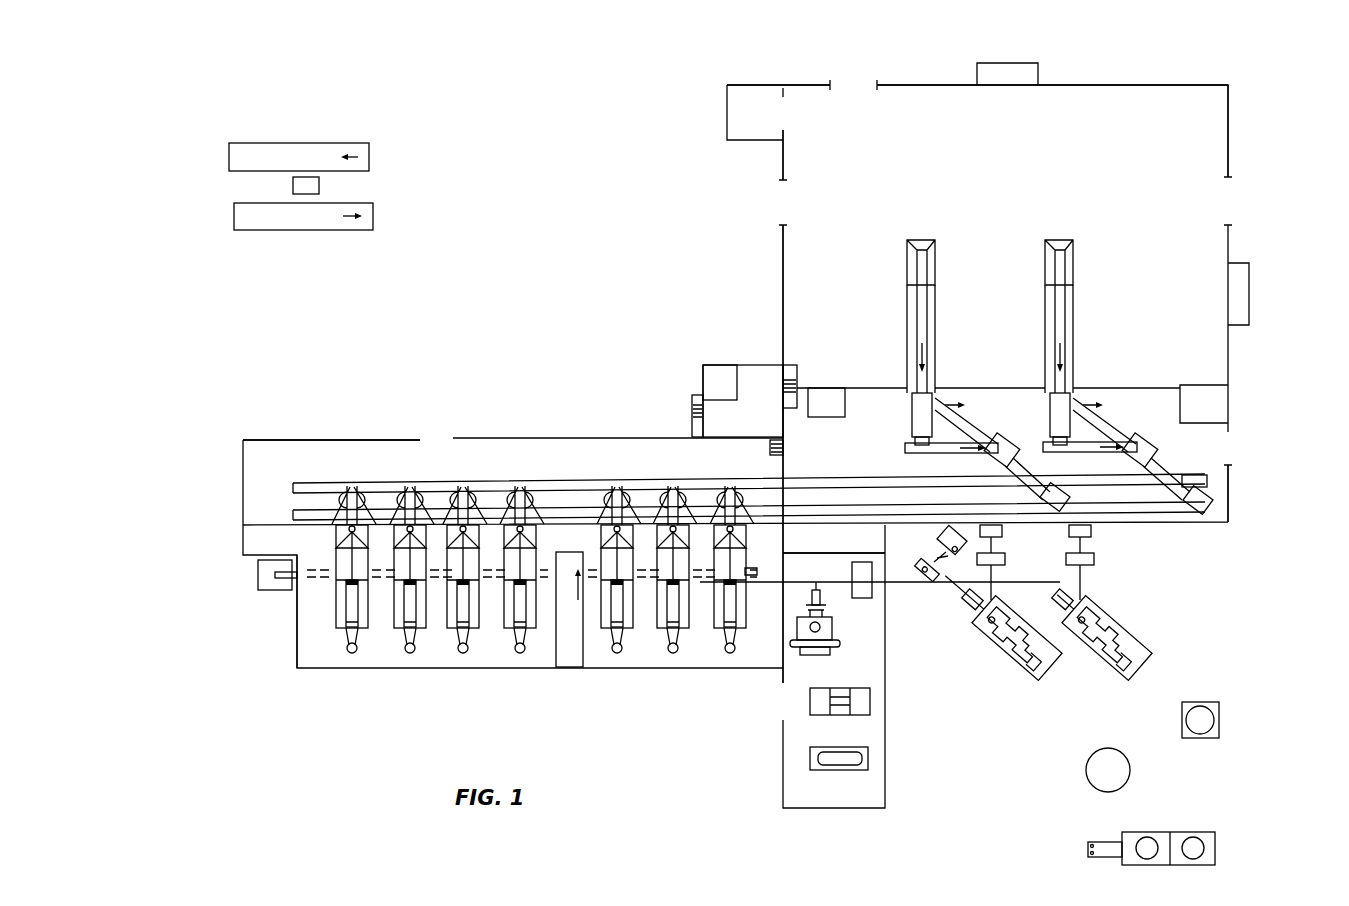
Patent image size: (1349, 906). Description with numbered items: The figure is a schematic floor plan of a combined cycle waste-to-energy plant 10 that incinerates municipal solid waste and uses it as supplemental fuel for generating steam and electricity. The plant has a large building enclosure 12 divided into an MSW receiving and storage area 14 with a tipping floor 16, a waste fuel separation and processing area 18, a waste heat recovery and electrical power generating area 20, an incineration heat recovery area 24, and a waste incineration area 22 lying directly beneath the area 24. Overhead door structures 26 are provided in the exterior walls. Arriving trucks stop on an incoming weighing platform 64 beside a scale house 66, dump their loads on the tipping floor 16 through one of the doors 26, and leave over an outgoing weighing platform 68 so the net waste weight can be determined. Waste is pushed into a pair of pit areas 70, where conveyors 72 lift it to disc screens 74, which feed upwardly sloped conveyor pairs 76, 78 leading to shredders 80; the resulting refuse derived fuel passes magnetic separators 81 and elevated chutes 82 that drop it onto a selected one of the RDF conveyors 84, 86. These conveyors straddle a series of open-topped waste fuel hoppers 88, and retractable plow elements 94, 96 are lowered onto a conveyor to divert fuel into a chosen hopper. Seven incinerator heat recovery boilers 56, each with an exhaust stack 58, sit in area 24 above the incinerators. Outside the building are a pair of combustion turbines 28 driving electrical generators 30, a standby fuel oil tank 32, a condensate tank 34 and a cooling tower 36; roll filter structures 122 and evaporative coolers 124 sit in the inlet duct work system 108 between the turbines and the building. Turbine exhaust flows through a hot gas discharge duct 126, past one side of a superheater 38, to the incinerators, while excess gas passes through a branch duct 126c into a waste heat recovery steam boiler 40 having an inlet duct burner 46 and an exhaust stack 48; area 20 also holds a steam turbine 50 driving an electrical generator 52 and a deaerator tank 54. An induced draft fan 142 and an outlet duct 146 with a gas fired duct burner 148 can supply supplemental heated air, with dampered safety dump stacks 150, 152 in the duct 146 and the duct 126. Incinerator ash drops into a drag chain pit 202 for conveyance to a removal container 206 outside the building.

The combined cycle waste-to-energy plant 10 is at (1278, 103).
The building enclosure 12 is at (1228, 148).
The MSW receiving and storage area 14 is at (1128, 107).
The tipping floor 16 is at (1016, 178).
The waste fuel separation and processing area 18 is at (1155, 398).
The waste heat recovery and electrical power generating area 20 is at (865, 663).
The waste incineration area 22 is at (598, 432).
The incineration heat recovery area 24 is at (386, 606).
The overhead door structures 26 is at (852, 82).
The combustion turbines 28 is at (1000, 640).
The electrical generators 30 is at (1030, 670).
The standby fuel oil tank 32 is at (1219, 721).
The condensate tank 34 is at (1130, 770).
The cooling tower 36 is at (1204, 832).
The superheater 38 is at (872, 590).
The waste heat recovery steam boiler 40 is at (832, 630).
The inlet duct burner 46 is at (822, 606).
The exhaust stack 48 is at (815, 632).
The steam turbine 50 is at (818, 716).
The electrical generator 52 is at (850, 716).
The deaerator tank 54 is at (827, 770).
The incinerator heat recovery boilers 56 is at (357, 653).
The exhaust stack 58 is at (360, 640).
The incoming weighing platform 64 is at (283, 230).
The scale house 66 is at (293, 185).
The outgoing weighing platform 68 is at (312, 143).
The pit areas 70 is at (935, 263).
The conveyors 72 is at (917, 350).
The disc screens 74 is at (912, 412).
The upwardly sloped conveyor 76 is at (970, 412).
The upwardly sloped conveyor 78 is at (950, 458).
The shredders 80 is at (1012, 442).
The magnetic separators 81 is at (1025, 485).
The elevated chutes 82 is at (1065, 492).
The RDF conveyor 84 is at (298, 478).
The RDF conveyor 86 is at (293, 522).
The waste fuel hoppers 88 is at (408, 490).
The plow element 94 is at (524, 486).
The plow element 96 is at (533, 512).
The inlet duct work system 108 is at (996, 598).
The roll filter structures 122 is at (1002, 531).
The evaporative coolers 124 is at (1005, 560).
The hot gas discharge duct 126 is at (772, 582).
The branch duct 126c is at (815, 590).
The induced draft fan 142 is at (940, 533).
The outlet duct 146 is at (920, 570).
The gas fired duct burner 148 is at (948, 560).
The dampered safety dump stack 150 is at (945, 580).
The dampered safety dump stack 152 is at (970, 606).
The drag chain pit 202 is at (318, 580).
The removal container 206 is at (258, 575).